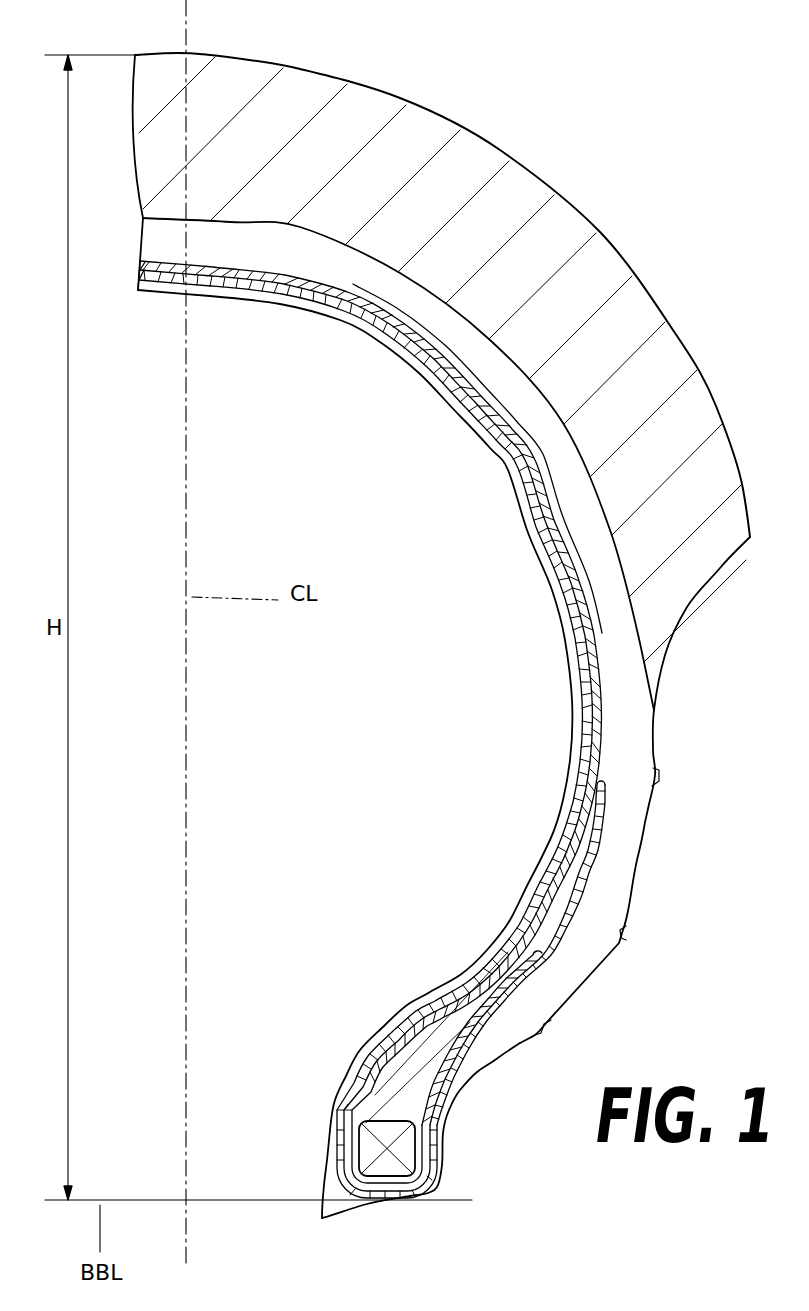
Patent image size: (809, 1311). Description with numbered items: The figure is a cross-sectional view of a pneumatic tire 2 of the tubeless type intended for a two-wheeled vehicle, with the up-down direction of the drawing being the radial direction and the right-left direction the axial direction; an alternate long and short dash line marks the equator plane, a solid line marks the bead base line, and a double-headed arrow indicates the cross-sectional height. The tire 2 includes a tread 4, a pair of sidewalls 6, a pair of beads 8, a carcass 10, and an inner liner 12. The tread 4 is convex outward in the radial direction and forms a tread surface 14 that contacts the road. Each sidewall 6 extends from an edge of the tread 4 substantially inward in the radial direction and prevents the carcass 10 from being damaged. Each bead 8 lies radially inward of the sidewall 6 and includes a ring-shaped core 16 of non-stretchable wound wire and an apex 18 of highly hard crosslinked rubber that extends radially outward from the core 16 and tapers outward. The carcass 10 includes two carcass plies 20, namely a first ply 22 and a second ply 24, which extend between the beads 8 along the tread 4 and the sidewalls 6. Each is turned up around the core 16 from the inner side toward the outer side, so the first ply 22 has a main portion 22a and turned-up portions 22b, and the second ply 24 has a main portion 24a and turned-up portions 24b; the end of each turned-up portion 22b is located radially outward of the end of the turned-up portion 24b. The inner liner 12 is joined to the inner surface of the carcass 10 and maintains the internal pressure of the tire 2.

The pneumatic tire 2 is at (668, 36).
The tread 4 is at (522, 187).
The sidewall 6 is at (628, 888).
The bead 8 is at (268, 1078).
The carcass 10 is at (400, 449).
The inner liner 12 is at (513, 480).
The tread surface 14 is at (618, 250).
The core 16 is at (372, 1145).
The apex 18 is at (392, 1081).
The carcass ply 20 is at (141, 275).
The first ply 22 is at (338, 312).
The second ply 24 is at (400, 336).
The main portion 22a is at (534, 535).
The main portion 24a is at (562, 602).
The turned-up portion 22b is at (600, 815).
The turned-up portion 24b is at (542, 957).